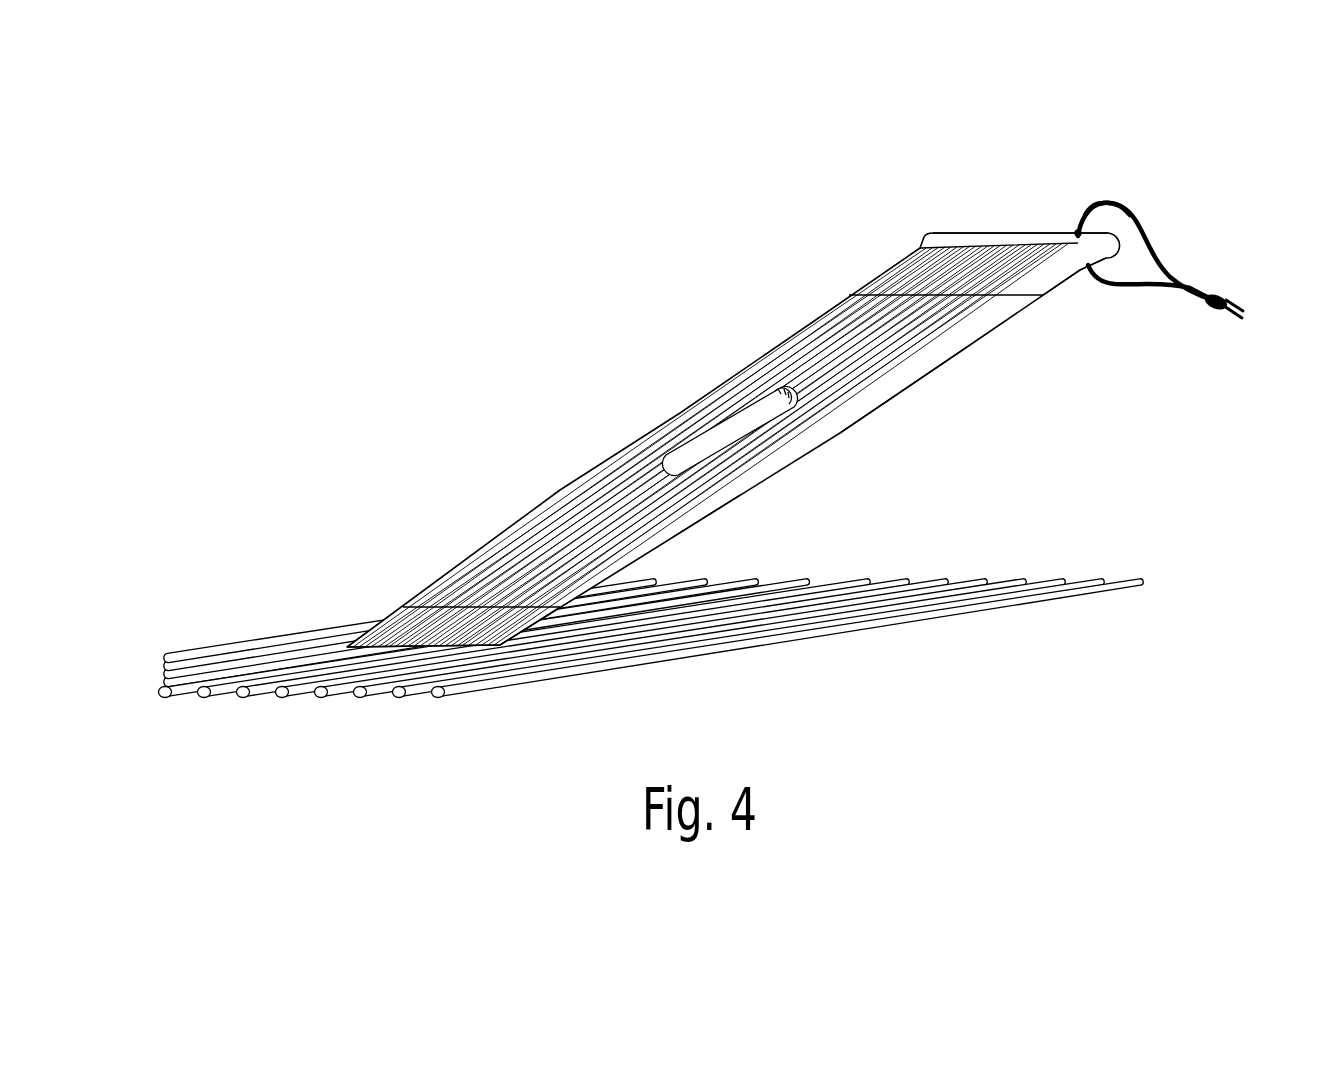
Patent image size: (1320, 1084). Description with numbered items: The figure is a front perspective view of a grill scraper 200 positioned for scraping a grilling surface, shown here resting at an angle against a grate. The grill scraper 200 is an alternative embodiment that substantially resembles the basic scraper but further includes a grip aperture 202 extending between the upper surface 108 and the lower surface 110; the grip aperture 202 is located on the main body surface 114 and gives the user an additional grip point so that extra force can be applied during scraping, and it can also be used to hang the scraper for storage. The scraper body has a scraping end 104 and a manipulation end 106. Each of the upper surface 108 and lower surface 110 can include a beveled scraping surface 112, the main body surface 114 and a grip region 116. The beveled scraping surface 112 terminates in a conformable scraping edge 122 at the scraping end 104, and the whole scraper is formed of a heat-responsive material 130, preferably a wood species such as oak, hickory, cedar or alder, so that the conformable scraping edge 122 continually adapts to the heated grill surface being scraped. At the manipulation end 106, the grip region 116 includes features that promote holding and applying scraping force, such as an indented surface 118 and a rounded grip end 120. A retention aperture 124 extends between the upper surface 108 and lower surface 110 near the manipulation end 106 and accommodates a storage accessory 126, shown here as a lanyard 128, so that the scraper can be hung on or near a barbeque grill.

The scraping end 104 is at (385, 655).
The manipulation end 106 is at (972, 232).
The upper surface 108 is at (593, 497).
The lower surface 110 is at (834, 428).
The beveled scraping surface 112 is at (453, 607).
The main body surface 114 is at (673, 504).
The grip region 116 is at (1043, 287).
The indented surface 118 is at (903, 270).
The rounded grip end 120 is at (1118, 235).
The conformable scraping edge 122 is at (456, 612).
The retention aperture 124 is at (1077, 230).
The storage accessory 126 is at (1105, 204).
The lanyard 128 is at (1188, 290).
The heat-responsive material 130 is at (518, 620).
The grill scraper 200 is at (1002, 388).
The grip aperture 202 is at (772, 382).